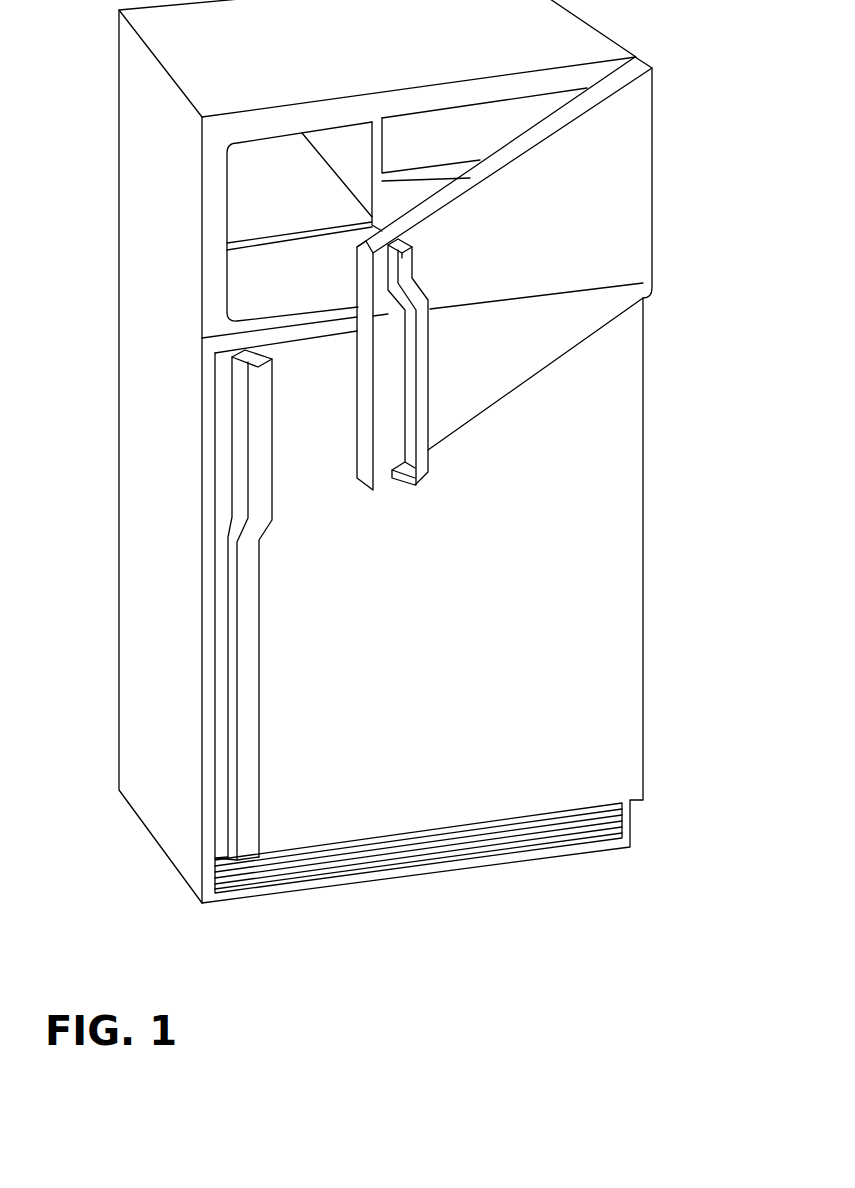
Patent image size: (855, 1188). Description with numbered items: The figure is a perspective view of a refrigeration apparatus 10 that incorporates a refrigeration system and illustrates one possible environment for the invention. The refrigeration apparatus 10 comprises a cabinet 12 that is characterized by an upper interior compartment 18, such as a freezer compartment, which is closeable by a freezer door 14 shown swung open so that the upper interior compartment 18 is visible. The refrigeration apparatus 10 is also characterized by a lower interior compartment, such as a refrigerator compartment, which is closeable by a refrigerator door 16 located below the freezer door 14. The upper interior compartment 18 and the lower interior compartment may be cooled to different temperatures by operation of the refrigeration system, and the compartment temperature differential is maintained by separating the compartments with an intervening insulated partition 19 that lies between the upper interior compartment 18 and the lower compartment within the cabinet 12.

The refrigeration apparatus 10 is at (655, 410).
The cabinet 12 is at (152, 538).
The freezer door 14 is at (623, 202).
The refrigerator door 16 is at (608, 575).
The upper interior compartment 18 is at (418, 148).
The insulated partition 19 is at (265, 280).